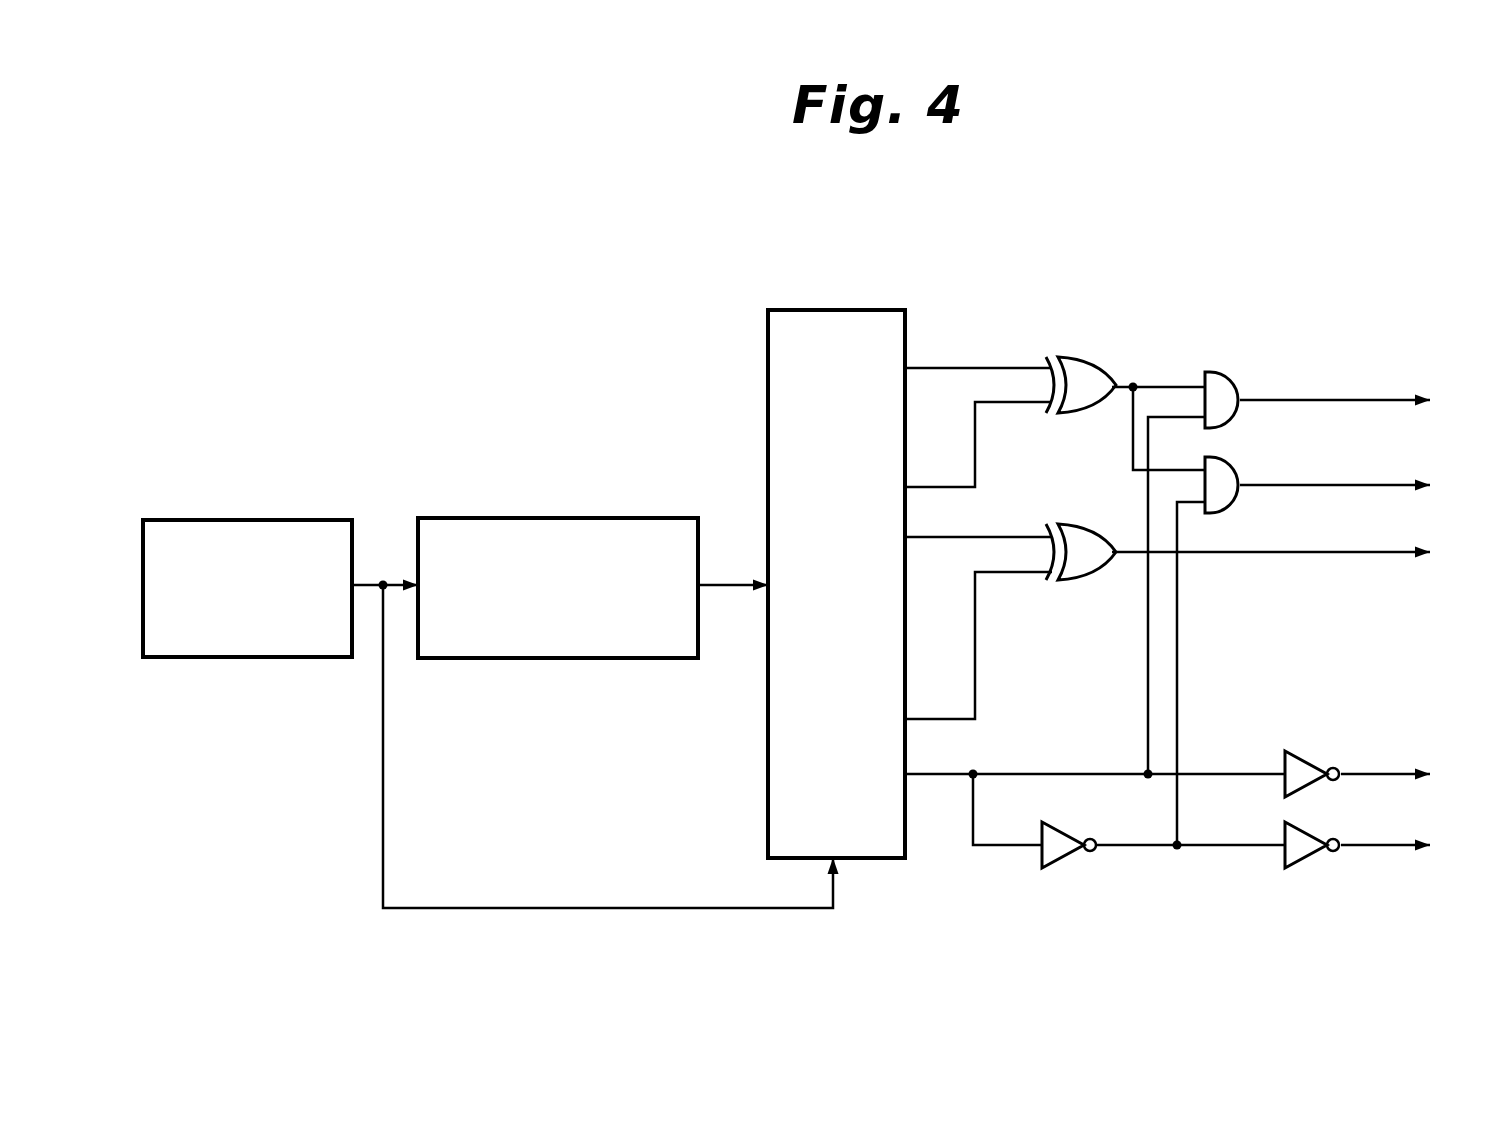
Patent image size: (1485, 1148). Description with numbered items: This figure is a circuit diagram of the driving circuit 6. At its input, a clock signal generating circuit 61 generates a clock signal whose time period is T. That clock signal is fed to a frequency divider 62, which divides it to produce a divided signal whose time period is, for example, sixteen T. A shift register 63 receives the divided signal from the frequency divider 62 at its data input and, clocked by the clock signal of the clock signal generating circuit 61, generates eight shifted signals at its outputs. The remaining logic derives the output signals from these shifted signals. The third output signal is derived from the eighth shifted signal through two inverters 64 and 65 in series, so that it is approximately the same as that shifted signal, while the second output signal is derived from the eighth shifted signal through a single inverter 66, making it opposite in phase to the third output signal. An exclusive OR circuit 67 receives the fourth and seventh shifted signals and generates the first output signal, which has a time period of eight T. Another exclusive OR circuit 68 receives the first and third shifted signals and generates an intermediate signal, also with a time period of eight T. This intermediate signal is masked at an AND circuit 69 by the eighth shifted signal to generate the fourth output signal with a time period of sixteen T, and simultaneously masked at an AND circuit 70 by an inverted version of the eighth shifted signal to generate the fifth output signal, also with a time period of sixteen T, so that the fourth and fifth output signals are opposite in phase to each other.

The driving circuit 6 is at (1191, 520).
The clock signal generating circuit 61 is at (247, 520).
The frequency divider 62 is at (557, 522).
The shift register 63 is at (837, 305).
The inverter 64 is at (1069, 838).
The inverter 65 is at (1316, 844).
The inverter 66 is at (1308, 762).
The exclusive OR circuit 67 is at (1073, 521).
The exclusive OR circuit 68 is at (1080, 354).
The AND circuit 69 is at (1232, 384).
The AND circuit 70 is at (1237, 459).